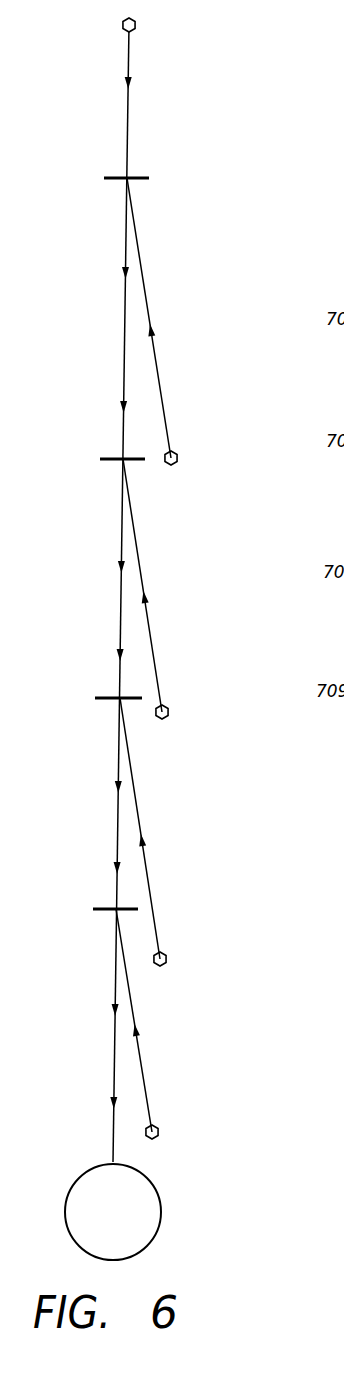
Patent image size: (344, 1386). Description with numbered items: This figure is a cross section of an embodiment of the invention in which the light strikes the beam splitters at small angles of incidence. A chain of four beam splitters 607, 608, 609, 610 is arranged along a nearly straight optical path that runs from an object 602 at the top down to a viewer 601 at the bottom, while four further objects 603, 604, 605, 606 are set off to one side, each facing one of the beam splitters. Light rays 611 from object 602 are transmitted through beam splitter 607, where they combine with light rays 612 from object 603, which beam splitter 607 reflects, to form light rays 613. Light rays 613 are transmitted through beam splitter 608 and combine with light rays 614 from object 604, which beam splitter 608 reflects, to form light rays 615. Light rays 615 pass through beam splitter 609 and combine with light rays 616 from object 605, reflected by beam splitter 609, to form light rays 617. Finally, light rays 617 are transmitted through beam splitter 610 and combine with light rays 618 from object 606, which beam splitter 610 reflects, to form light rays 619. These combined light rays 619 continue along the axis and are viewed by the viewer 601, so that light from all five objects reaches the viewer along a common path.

The viewer 601 is at (78, 1178).
The object 602 is at (137, 25).
The object 603 is at (178, 458).
The object 604 is at (169, 712).
The object 605 is at (167, 959).
The object 606 is at (159, 1132).
The beam splitter 607 is at (118, 176).
The beam splitter 608 is at (110, 457).
The beam splitter 609 is at (106, 697).
The beam splitter 610 is at (108, 908).
The light rays 611 is at (128, 120).
The light rays 612 is at (150, 368).
The light rays 613 is at (122, 353).
The light rays 614 is at (138, 556).
The light rays 615 is at (120, 596).
The light rays 616 is at (148, 872).
The light rays 617 is at (117, 820).
The light rays 618 is at (140, 1052).
The light rays 619 is at (112, 1053).